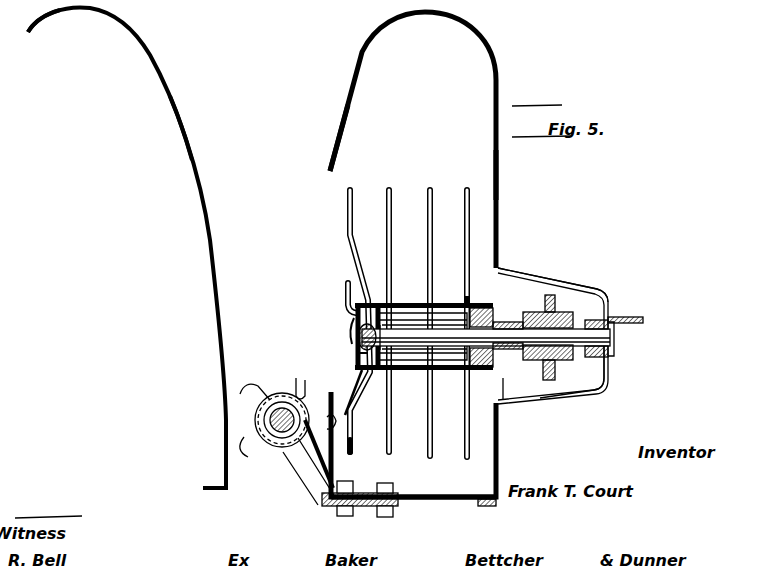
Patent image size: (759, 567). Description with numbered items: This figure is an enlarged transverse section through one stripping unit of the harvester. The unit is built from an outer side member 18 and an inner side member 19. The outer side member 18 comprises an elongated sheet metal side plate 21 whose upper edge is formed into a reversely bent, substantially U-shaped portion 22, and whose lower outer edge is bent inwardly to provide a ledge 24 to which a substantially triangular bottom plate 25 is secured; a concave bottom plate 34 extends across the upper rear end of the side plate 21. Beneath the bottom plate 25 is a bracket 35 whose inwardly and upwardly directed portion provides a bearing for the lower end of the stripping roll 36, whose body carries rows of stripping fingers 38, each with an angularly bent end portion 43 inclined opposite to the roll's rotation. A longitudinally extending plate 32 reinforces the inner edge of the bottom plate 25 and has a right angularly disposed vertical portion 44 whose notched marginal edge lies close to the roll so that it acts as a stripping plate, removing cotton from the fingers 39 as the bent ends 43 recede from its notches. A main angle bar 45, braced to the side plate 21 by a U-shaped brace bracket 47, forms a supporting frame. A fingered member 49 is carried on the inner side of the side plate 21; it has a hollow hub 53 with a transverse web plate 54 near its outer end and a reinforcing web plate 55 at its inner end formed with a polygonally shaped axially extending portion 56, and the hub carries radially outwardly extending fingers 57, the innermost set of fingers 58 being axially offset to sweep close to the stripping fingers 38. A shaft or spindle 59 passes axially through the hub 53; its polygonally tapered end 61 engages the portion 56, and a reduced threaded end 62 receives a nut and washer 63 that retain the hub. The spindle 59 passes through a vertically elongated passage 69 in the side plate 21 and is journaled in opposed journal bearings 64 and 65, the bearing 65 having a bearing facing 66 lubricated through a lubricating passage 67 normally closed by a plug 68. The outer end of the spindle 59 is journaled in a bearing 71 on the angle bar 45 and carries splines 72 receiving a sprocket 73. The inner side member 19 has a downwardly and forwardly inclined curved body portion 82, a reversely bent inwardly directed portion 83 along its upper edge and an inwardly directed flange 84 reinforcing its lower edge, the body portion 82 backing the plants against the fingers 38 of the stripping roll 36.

The outer side member 18 is at (507, 197).
The inner side member 19 is at (222, 271).
The side plate 21 is at (499, 172).
The reversely bent U-shaped portion 22 is at (331, 113).
The ledge 24 is at (479, 500).
The bottom plate 25 is at (438, 500).
The longitudinally extending plate 32 is at (338, 474).
The concave bottom plate 34 is at (282, 426).
The bracket 35 is at (298, 465).
The stripping roll 36 is at (249, 422).
The stripping fingers 38 is at (296, 384).
The fingers 39 is at (312, 424).
The angularly bent end portion 43 is at (298, 378).
The right angularly disposed vertical portion 44 is at (345, 453).
The main angle bar 45 is at (629, 318).
The U-shaped brace bracket 47 is at (609, 377).
The fingered member 49 is at (347, 271).
The hub 53 is at (382, 309).
The transverse web plate 54 is at (418, 352).
The reinforcing web plate 55 is at (359, 370).
The polygonally shaped axially extending portion 56 is at (362, 354).
The fingers 57 is at (429, 191).
The innermost set of fingers 58 is at (353, 192).
The shaft or spindle 59 is at (423, 349).
The polygonally tapered end 61 is at (386, 329).
The reduced threaded end 62 is at (358, 333).
The nut and washer 63 is at (358, 322).
The journal bearing 64 is at (517, 327).
The journal bearing 65 is at (486, 368).
The bearing facing 66 is at (491, 369).
The lubricating passage 67 is at (470, 304).
The plug 68 is at (494, 310).
The elongated passage 69 is at (539, 301).
The bearing 71 is at (598, 324).
The splines 72 is at (553, 340).
The sprocket 73 is at (551, 299).
The curved body portion 82 is at (201, 186).
The reversely bent inwardly directed portion 83 is at (42, 33).
The inwardly directed flange 84 is at (204, 488).